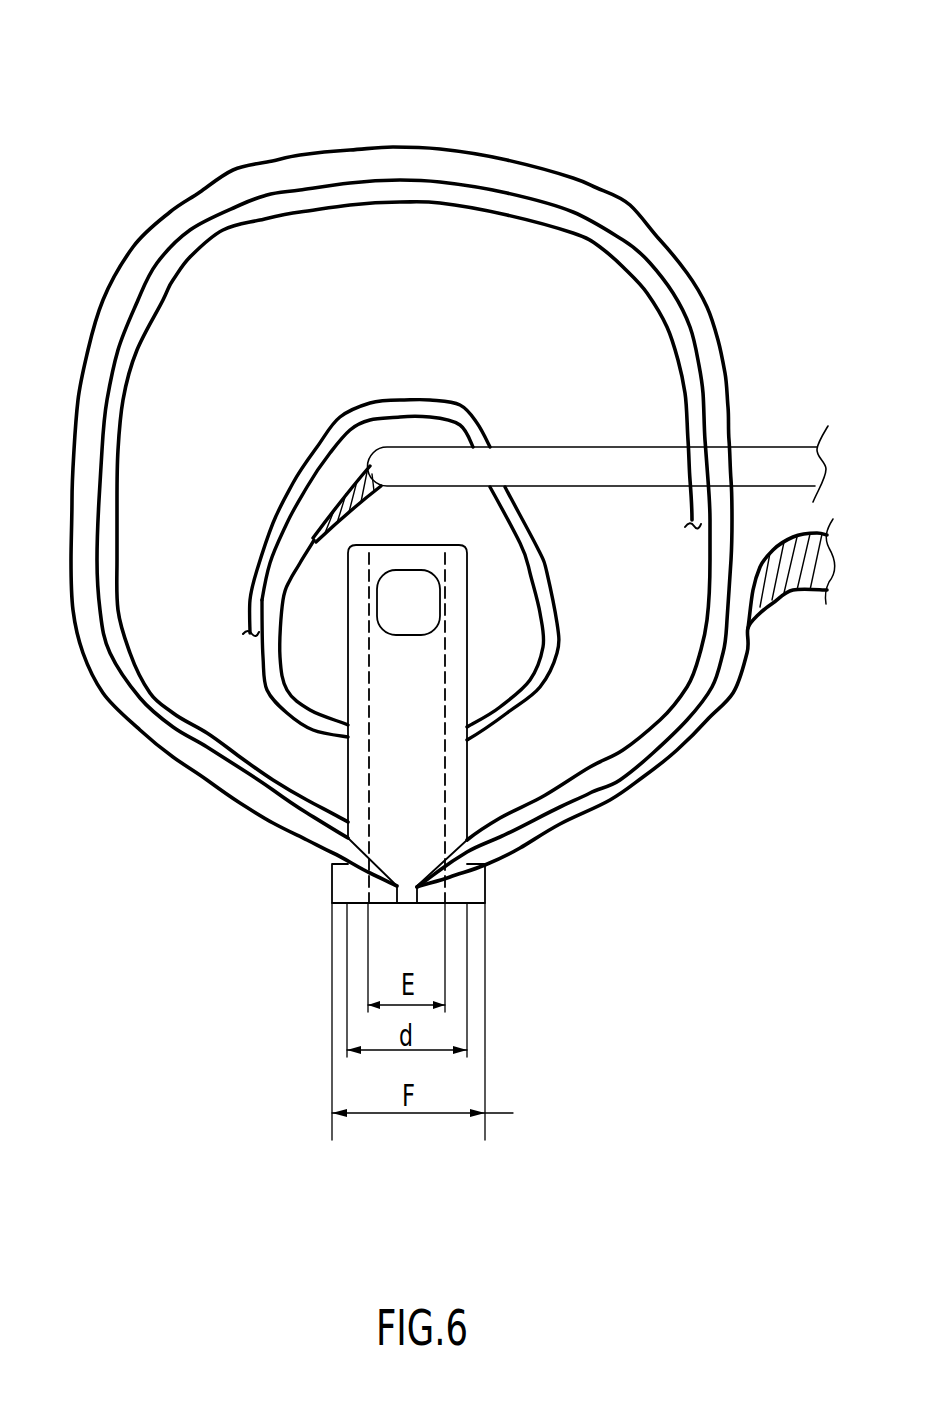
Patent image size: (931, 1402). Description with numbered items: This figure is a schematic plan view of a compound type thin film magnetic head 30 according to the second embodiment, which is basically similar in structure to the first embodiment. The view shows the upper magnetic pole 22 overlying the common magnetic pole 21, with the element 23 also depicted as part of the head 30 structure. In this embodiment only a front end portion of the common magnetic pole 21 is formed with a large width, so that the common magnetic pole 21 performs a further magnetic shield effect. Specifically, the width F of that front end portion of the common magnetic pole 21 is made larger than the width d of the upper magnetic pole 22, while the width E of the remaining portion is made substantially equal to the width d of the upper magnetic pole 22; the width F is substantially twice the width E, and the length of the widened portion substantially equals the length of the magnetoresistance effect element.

The compound type thin film magnetic head 30 is at (232, 152).
The cuff 23 is at (597, 188).
The upper magnetic pole 22 is at (467, 764).
The common magnetic pole 21 is at (333, 890).